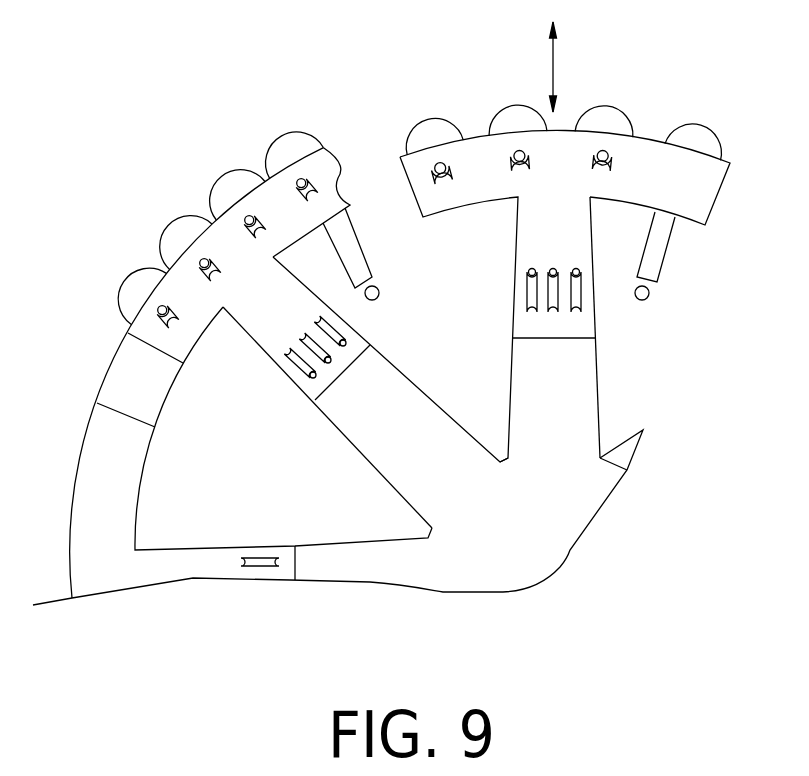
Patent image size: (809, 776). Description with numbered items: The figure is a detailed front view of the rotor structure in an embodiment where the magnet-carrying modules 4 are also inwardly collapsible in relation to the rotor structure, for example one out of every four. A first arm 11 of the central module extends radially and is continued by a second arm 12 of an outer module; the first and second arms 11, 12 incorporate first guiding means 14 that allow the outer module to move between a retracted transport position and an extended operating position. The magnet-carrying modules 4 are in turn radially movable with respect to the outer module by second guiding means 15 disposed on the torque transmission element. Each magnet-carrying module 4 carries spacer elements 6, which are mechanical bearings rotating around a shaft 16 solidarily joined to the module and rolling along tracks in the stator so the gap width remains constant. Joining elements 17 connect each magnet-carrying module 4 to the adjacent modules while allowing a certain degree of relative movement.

The magnet-carrying module 4 is at (350, 260).
The spacer element 6 is at (182, 248).
The first arm 11 is at (392, 432).
The second arm 12 is at (275, 313).
The first guiding means 14 is at (297, 363).
The second guiding means 15 is at (177, 327).
The shaft 16 is at (165, 313).
The joining element 17 is at (380, 298).